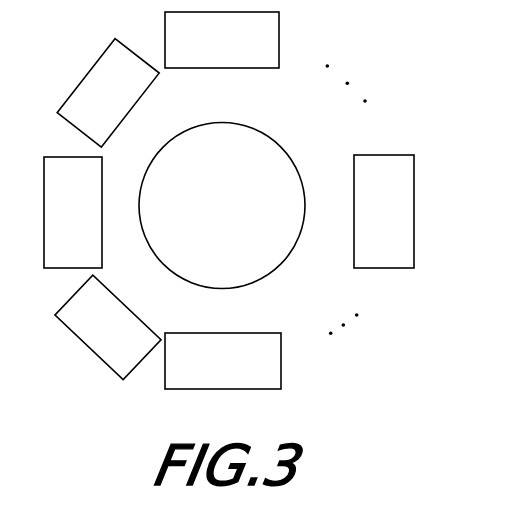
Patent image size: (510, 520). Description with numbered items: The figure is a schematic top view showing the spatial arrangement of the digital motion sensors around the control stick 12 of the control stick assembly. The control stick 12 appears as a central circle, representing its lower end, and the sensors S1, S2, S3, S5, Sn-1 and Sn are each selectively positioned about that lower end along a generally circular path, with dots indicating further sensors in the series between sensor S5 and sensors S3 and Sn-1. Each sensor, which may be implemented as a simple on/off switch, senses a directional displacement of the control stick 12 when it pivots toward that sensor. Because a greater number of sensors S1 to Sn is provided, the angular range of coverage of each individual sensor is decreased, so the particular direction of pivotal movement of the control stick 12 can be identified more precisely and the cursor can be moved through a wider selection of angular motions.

The control stick 12 is at (288, 157).
The motion sensor S1 is at (73, 212).
The motion sensor S2 is at (108, 93).
The motion sensor S3 is at (222, 39).
The motion sensor S5 is at (384, 211).
The motion sensor Sn is at (108, 327).
The motion sensor Sn-1 is at (223, 361).